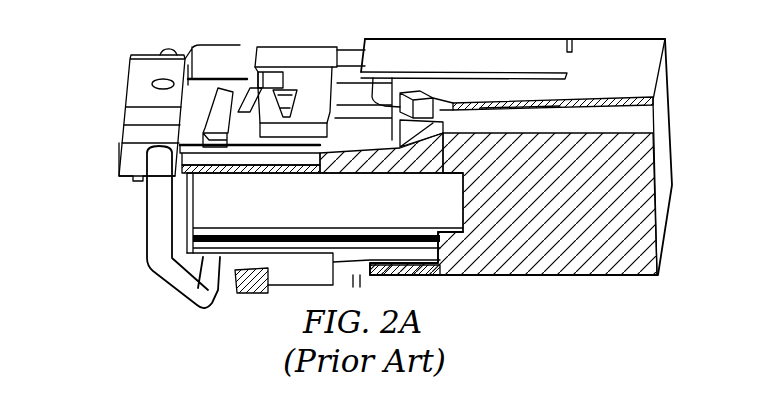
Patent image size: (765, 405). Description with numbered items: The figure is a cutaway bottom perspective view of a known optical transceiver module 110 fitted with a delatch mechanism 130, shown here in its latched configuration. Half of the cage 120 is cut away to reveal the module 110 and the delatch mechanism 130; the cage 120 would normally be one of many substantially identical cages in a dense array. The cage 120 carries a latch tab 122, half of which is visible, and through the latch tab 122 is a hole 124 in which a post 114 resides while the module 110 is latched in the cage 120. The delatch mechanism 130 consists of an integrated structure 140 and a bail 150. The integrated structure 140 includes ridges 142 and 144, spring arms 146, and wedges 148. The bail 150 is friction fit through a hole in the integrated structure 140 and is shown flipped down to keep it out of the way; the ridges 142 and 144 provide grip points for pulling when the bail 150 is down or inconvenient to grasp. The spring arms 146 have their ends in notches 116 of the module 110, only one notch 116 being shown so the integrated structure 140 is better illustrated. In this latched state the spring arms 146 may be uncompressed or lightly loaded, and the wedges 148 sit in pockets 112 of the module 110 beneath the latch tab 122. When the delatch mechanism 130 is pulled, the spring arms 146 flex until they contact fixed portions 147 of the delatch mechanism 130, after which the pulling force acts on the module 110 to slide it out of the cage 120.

The optical transceiver module 110 is at (625, 268).
The pockets 112 is at (440, 172).
The post 114 is at (412, 93).
The notches 116 is at (262, 76).
The cage 120 is at (615, 50).
The latch tab 122 is at (515, 90).
The hole 124 is at (440, 108).
The delatch mechanism 130 is at (96, 120).
The integrated structure 140 is at (302, 162).
The ridge 142 is at (140, 80).
The ridge 144 is at (133, 178).
The spring arms 146 is at (213, 132).
The fixed portions 147 is at (233, 132).
The wedges 148 is at (430, 147).
The bail 150 is at (158, 230).